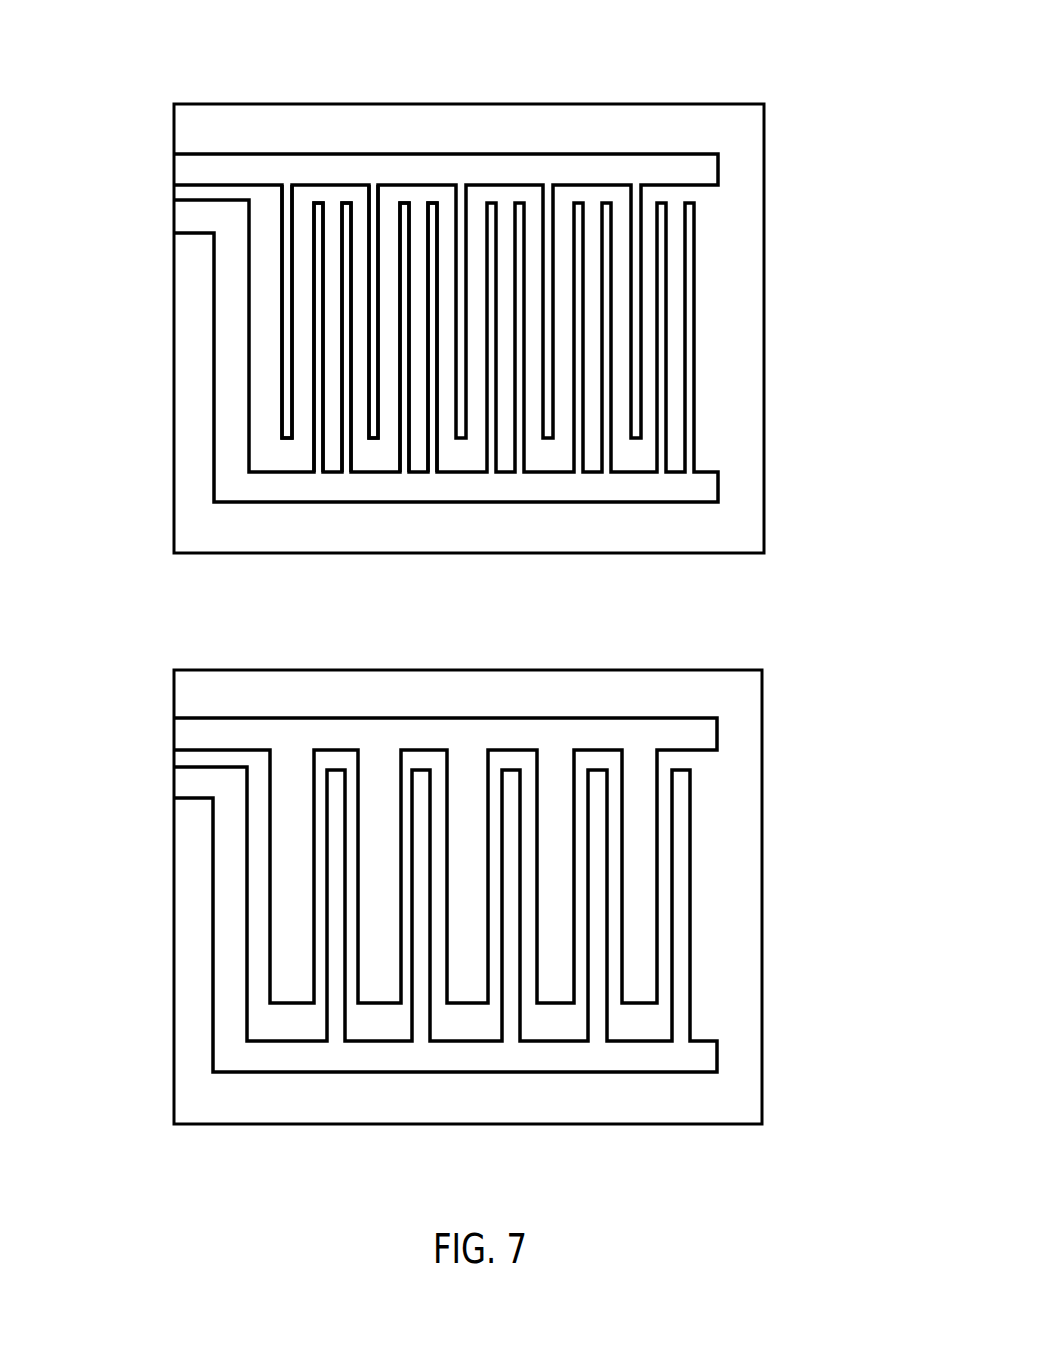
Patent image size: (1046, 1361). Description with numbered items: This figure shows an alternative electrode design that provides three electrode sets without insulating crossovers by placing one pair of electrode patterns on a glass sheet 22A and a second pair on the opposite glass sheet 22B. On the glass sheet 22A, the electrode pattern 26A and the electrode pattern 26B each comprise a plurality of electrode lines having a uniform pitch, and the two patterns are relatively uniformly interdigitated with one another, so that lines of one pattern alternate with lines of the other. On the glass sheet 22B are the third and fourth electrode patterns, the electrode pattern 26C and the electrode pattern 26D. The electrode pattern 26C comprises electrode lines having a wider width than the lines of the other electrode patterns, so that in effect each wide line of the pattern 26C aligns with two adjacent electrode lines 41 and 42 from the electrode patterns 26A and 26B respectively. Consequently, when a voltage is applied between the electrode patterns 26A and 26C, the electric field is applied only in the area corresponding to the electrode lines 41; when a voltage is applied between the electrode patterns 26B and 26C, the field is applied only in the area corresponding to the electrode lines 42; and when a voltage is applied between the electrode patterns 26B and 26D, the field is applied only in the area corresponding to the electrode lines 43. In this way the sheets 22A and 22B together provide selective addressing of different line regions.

The glass sheet 22A is at (764, 256).
The glass sheet 22B is at (762, 845).
The electrode pattern 26A is at (673, 165).
The electrode pattern 26B is at (700, 488).
The electrode pattern 26C is at (287, 755).
The electrode pattern 26D is at (340, 1055).
The electrode lines 41 is at (373, 220).
The electrode lines 42 is at (405, 227).
The electrode lines 43 is at (433, 287).